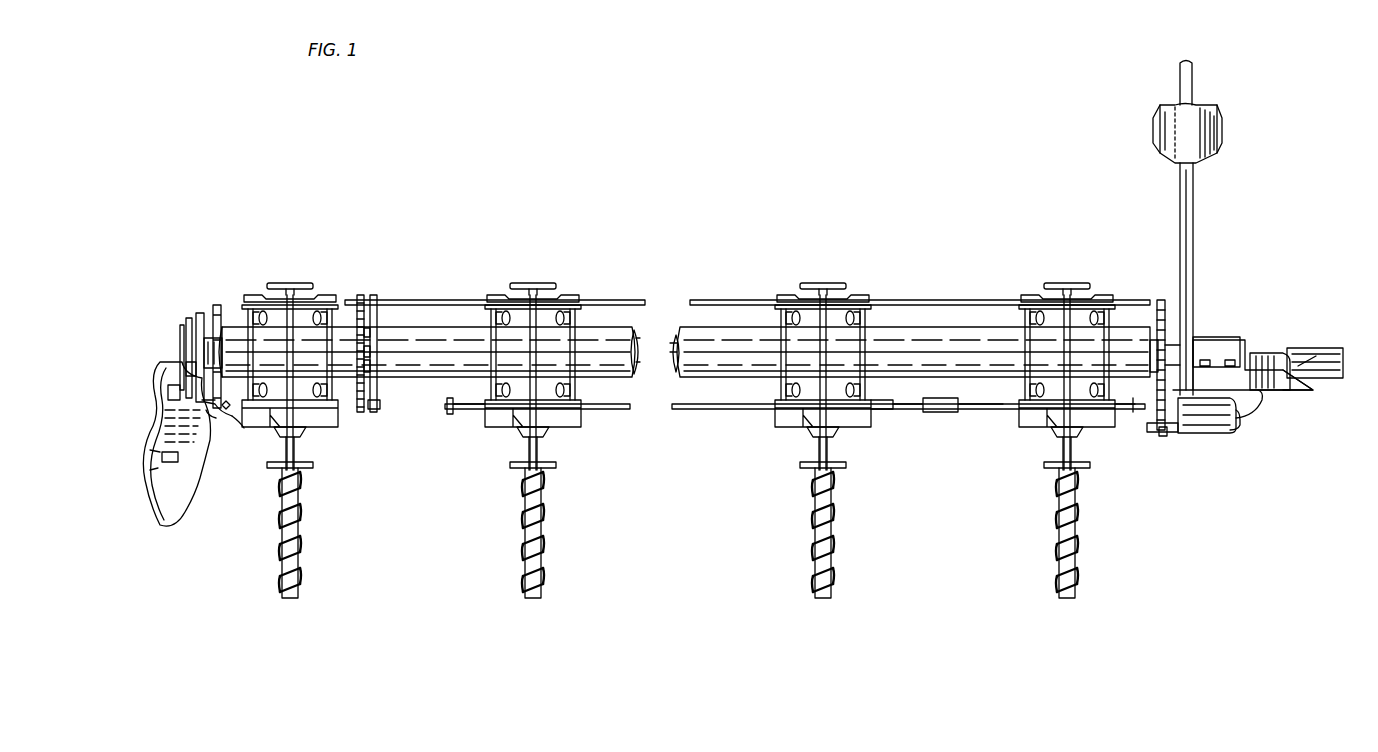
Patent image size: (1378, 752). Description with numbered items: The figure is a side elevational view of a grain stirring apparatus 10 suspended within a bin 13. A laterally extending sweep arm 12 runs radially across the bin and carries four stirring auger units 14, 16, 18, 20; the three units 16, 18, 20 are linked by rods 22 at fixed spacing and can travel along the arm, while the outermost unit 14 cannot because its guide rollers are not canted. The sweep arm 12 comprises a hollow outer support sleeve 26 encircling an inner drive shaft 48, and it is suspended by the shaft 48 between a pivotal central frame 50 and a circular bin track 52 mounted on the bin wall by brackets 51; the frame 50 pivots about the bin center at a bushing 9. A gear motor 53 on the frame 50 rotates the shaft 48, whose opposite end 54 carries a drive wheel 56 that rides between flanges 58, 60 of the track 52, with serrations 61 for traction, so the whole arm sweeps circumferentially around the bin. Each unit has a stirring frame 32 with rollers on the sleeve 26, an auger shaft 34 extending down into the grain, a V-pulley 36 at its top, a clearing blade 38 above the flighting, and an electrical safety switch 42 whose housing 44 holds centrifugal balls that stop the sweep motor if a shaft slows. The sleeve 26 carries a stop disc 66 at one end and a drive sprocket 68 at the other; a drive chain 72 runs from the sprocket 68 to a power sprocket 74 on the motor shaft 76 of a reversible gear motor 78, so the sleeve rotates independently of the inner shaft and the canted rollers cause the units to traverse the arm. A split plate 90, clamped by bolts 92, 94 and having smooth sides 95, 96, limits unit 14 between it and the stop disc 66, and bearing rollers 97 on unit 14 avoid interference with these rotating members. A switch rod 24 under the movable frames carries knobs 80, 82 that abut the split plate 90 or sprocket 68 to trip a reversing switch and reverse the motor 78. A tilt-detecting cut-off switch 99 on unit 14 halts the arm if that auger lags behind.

The bushing 9 is at (1153, 130).
The grain stirring apparatus 10 is at (697, 243).
The sweep support arm member 12 is at (630, 318).
The bin 13 is at (160, 528).
The stirring auger unit 14 is at (299, 415).
The stirring auger unit 16 is at (542, 426).
The stirring auger unit 18 is at (867, 419).
The stirring auger unit 20 is at (1077, 415).
The rods 22 is at (735, 288).
The switch rod 24 is at (690, 408).
The outer support sleeve 26 is at (644, 340).
The stirring frame 32 is at (843, 290).
The auger shaft 34 is at (848, 533).
The V-pulley 36 is at (823, 267).
The clearing blade 38 is at (843, 457).
The electrical safety switch 42 is at (848, 432).
The switch housing 44 is at (795, 453).
The inner drive shaft 48 is at (674, 357).
The central frame 50 is at (1195, 240).
The brackets 51 is at (222, 428).
The bin track 52 is at (222, 410).
The gear motor 53 is at (1310, 352).
The end of drive shaft 54 is at (199, 330).
The drive wheel 56 is at (186, 325).
The flange 58 is at (188, 337).
The flange 60 is at (198, 352).
The serrations 61 is at (182, 372).
The stop disc 66 is at (217, 305).
The drive disc or sprocket 68 is at (1158, 306).
The drive chain 72 is at (1150, 424).
The power sprocket 74 is at (1163, 440).
The motor shaft 76 is at (1158, 430).
The reversible gear motor 78 is at (1208, 434).
The knob 80 is at (452, 412).
The knob 82 is at (1116, 421).
The split plate 90 is at (384, 350).
The bolt 92 is at (378, 332).
The bolt 94 is at (390, 366).
The side surface of split plate 95 is at (375, 404).
The side surface of split plate 96 is at (352, 334).
The bearing rollers 97 is at (349, 320).
The tilt-detecting cut-off switch 99 is at (240, 430).